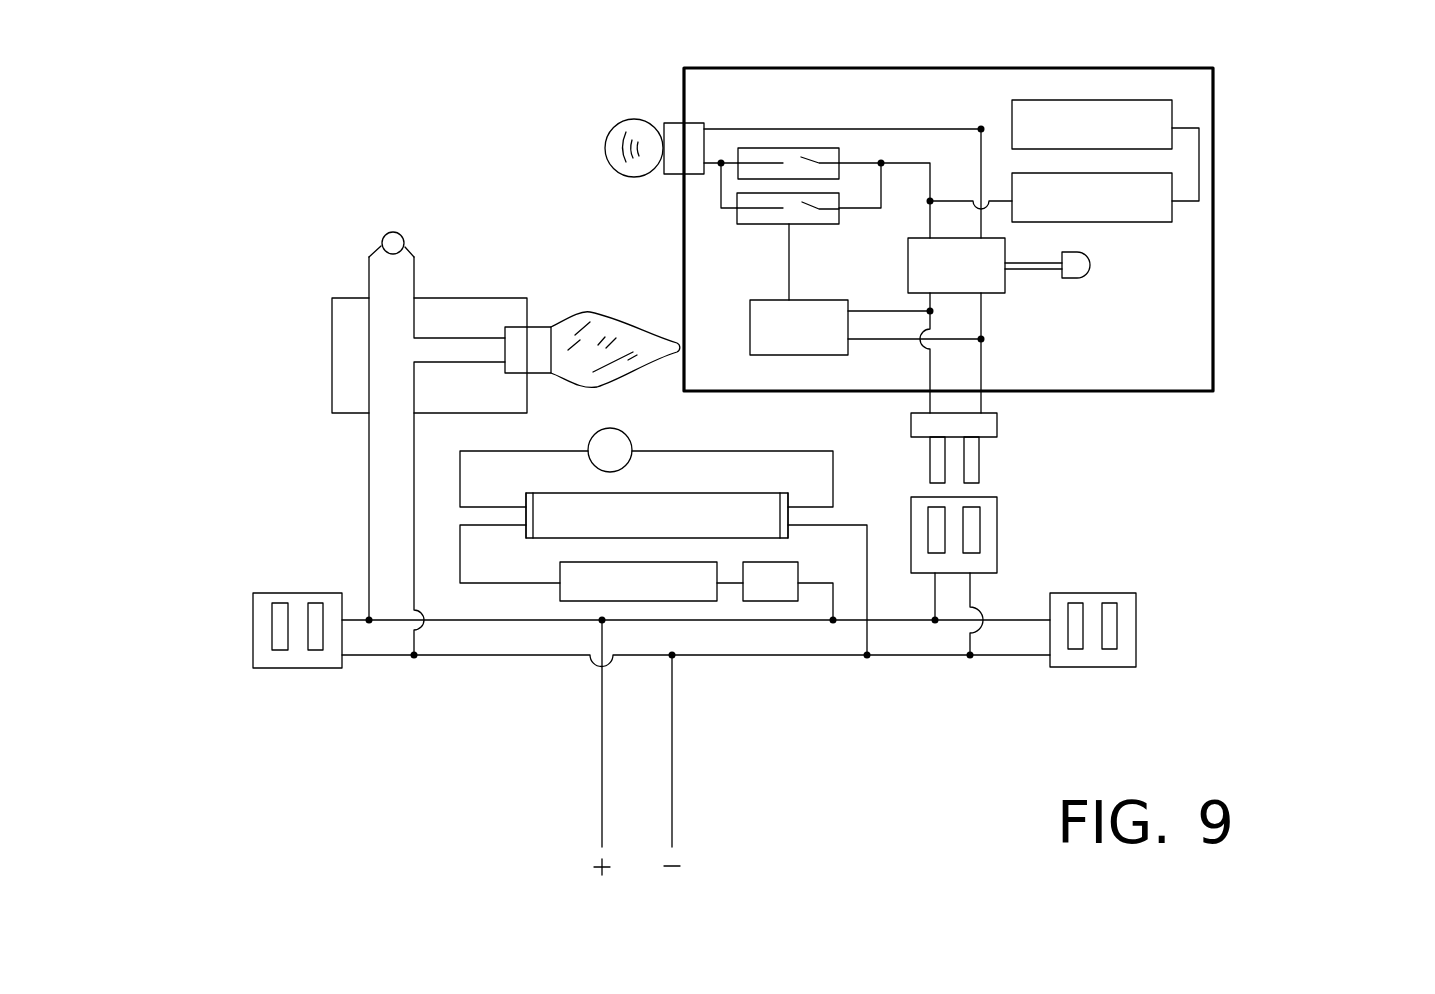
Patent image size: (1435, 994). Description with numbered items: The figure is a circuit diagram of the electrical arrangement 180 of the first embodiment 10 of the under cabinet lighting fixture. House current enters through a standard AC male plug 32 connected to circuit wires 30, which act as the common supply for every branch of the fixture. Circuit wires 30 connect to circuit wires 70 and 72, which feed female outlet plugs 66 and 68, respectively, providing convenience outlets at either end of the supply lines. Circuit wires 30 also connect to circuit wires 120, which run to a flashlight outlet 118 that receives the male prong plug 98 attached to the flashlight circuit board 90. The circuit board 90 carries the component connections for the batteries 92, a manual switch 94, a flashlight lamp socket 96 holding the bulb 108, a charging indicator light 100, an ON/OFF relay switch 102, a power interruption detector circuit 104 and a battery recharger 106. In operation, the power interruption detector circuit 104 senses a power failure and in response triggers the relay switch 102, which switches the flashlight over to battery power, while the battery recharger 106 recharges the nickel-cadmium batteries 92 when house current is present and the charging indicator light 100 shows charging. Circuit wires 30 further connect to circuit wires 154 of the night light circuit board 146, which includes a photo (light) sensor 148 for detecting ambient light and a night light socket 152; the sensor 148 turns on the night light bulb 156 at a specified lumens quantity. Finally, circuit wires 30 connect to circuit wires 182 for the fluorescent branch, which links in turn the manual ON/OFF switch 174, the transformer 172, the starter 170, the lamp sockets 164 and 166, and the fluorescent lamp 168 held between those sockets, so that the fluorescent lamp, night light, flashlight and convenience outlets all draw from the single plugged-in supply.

The first embodiment 10 is at (413, 110).
The circuit wires 30 is at (672, 718).
The standard AC male plug 32 is at (582, 748).
The female outlet plug 66 is at (297, 658).
The female outlet plug 68 is at (1093, 658).
The circuit wires 70 is at (362, 657).
The circuit wires 72 is at (998, 622).
The flashlight circuit board 90 is at (1196, 334).
The batteries 92 is at (1109, 193).
The manual switch 94 is at (781, 165).
The flashlight lamp socket 96 is at (690, 140).
The male prong plug 98 is at (985, 423).
The charging indicator light 100 is at (1080, 268).
The ON/OFF relay switch 102 is at (752, 210).
The power interruption detector circuit 104 is at (813, 312).
The battery recharger 106 is at (995, 285).
The bulb 108 is at (640, 128).
The flashlight outlet 118 is at (985, 508).
The circuit wires 120 is at (972, 604).
The night light circuit board 146 is at (338, 301).
The photo (light) sensor 148 is at (385, 240).
The night light socket 152 is at (541, 335).
The circuit wires 154 is at (414, 455).
The night light bulb 156 is at (637, 333).
The lamp socket 164 is at (527, 513).
The lamp socket 166 is at (790, 515).
The fluorescent lamp 168 is at (703, 512).
The starter 170 is at (612, 442).
The transformer 172 is at (582, 585).
The manual ON/OFF switch 174 is at (760, 590).
The electrical arrangement 180 is at (1205, 526).
The circuit wires 182 is at (835, 608).